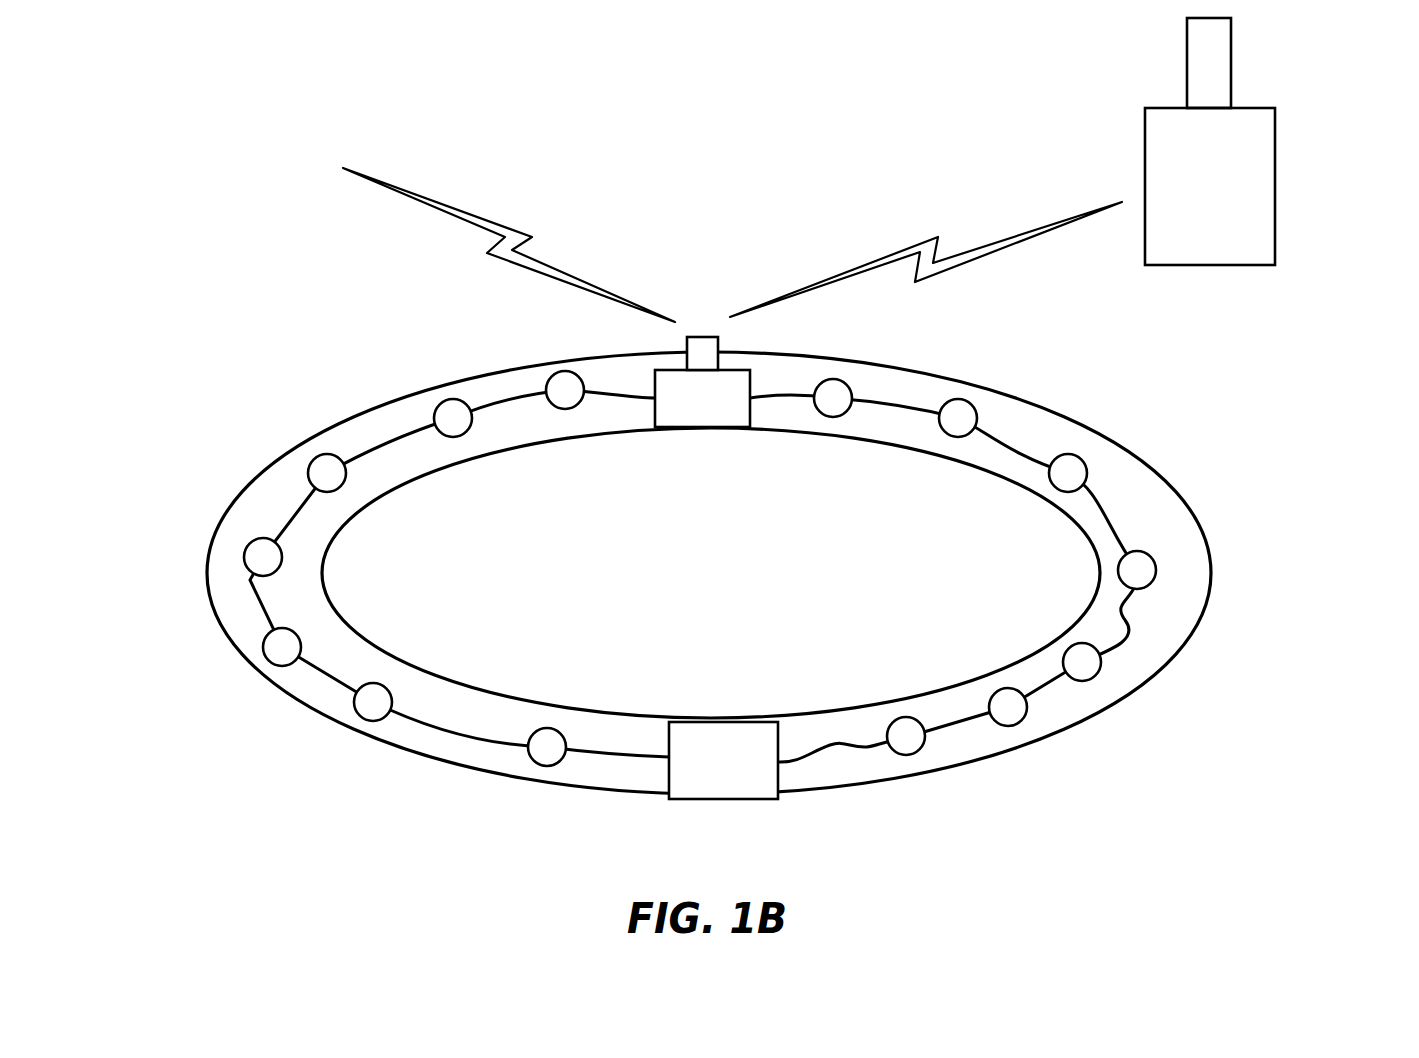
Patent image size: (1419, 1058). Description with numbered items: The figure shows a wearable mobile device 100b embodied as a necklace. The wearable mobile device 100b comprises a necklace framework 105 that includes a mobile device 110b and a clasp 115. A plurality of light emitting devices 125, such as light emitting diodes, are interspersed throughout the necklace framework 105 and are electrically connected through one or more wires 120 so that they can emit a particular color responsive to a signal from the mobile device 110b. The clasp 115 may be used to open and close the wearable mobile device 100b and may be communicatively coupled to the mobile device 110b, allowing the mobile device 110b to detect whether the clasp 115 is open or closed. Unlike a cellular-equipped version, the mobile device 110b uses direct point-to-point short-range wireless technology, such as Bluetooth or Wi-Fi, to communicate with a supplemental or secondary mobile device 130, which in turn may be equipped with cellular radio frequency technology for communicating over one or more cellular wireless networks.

The wearable mobile device 100b is at (142, 189).
The necklace framework 105 is at (208, 573).
The mobile device 110b is at (655, 368).
The clasp 115 is at (725, 799).
The wires 120 is at (373, 443).
The light emitting devices 125 is at (1068, 455).
The secondary mobile device 130 is at (1275, 183).